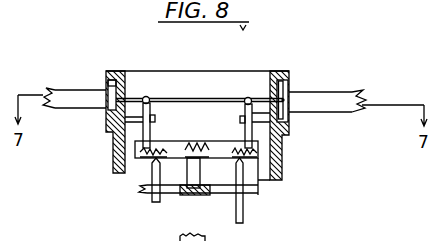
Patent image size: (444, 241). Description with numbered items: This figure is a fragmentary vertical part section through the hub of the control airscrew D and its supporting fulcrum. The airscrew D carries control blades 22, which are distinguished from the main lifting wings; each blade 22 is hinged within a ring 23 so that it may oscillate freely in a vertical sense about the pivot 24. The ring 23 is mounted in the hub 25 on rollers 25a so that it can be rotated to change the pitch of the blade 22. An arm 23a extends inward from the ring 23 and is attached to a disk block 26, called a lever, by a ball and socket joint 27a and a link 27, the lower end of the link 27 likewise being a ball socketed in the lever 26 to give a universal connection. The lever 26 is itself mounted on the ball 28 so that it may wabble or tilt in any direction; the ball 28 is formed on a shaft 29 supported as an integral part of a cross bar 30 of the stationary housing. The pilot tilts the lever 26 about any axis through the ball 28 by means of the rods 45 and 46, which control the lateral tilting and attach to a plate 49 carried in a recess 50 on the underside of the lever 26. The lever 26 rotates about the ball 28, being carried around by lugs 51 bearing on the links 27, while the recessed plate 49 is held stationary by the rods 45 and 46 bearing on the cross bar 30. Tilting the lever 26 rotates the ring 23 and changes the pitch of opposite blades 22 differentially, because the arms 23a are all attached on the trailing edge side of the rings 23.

The control blade 22 is at (352, 107).
The ring 23 is at (284, 91).
The arm 23a is at (141, 97).
The pivot 24 is at (287, 107).
The hub 25 is at (250, 71).
The roller 25a is at (107, 82).
The lever 26 is at (165, 150).
The link 27 is at (152, 113).
The ball and socket joint 27a is at (244, 101).
The ball 28 is at (196, 146).
The shaft 29 is at (200, 173).
The cross bar 30 is at (197, 195).
The rod 45 is at (160, 200).
The rod 46 is at (244, 212).
The plate 49 is at (143, 150).
The recess 50 is at (156, 163).
The lug 51 is at (266, 118).
The airscrew D is at (332, 99).